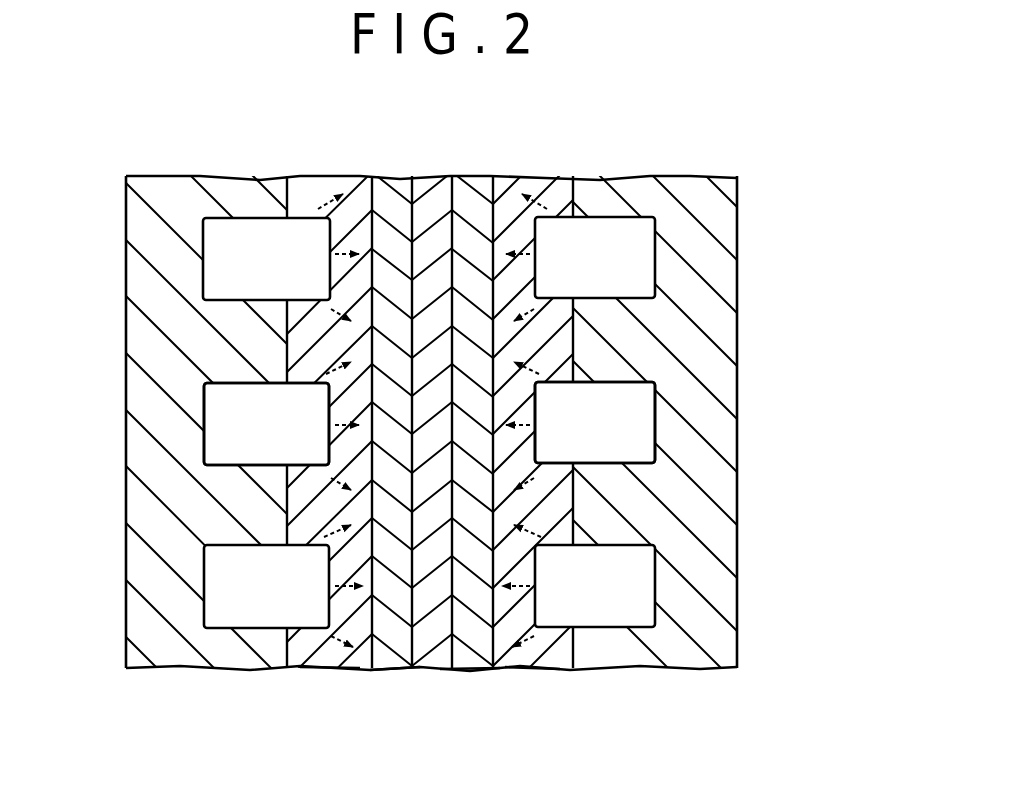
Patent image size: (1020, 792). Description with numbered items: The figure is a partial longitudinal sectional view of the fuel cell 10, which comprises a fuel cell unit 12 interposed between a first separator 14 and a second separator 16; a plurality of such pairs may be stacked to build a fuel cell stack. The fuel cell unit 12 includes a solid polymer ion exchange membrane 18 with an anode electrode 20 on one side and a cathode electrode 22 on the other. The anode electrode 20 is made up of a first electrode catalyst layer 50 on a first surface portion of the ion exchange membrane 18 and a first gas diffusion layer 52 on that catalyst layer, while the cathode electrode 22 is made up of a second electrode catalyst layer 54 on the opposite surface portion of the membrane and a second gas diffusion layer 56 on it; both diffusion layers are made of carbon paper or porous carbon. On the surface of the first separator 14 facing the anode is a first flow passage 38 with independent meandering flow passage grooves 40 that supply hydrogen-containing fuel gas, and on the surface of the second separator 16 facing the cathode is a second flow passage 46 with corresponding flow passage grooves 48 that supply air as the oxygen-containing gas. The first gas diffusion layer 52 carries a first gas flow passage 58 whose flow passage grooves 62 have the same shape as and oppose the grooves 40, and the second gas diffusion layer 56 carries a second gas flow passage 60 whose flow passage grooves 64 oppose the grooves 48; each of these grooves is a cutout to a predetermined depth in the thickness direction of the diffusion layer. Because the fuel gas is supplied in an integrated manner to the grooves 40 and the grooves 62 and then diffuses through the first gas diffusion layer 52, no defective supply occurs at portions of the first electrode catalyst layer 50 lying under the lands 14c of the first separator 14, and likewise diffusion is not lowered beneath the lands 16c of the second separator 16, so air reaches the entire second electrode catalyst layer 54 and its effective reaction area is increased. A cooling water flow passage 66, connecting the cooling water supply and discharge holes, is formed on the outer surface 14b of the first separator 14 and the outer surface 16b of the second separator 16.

The fuel cell 10 is at (430, 417).
The fuel cell unit 12 is at (482, 137).
The first separator 14 is at (751, 167).
The surface of the first separator 14b is at (737, 328).
The lands of the first separator 14c is at (605, 508).
The second separator 16 is at (146, 171).
The surface of the second separator 16b is at (124, 642).
The lands of the second separator 16c is at (284, 347).
The solid polymer ion exchange membrane 18 is at (438, 178).
The anode electrode 20 is at (502, 168).
The cathode electrode 22 is at (338, 170).
The first flow passage 38 is at (651, 246).
The flow passage grooves 40 is at (658, 411).
The second flow passage 46 is at (214, 258).
The flow passage grooves 48 is at (212, 447).
The first electrode catalyst layer 50 is at (471, 653).
The first gas diffusion layer 52 is at (532, 657).
The second electrode catalyst layer 54 is at (394, 658).
The second gas diffusion layer 56 is at (328, 655).
The first gas flow passage 58 is at (572, 437).
The second gas flow passage 60 is at (310, 417).
The flow passage grooves 62 is at (560, 567).
The flow passage grooves 64 is at (327, 588).
The cooling water flow passage 66 is at (116, 215).